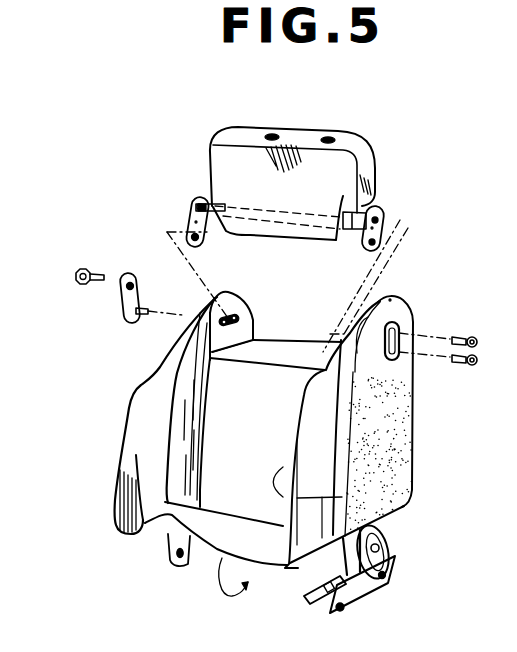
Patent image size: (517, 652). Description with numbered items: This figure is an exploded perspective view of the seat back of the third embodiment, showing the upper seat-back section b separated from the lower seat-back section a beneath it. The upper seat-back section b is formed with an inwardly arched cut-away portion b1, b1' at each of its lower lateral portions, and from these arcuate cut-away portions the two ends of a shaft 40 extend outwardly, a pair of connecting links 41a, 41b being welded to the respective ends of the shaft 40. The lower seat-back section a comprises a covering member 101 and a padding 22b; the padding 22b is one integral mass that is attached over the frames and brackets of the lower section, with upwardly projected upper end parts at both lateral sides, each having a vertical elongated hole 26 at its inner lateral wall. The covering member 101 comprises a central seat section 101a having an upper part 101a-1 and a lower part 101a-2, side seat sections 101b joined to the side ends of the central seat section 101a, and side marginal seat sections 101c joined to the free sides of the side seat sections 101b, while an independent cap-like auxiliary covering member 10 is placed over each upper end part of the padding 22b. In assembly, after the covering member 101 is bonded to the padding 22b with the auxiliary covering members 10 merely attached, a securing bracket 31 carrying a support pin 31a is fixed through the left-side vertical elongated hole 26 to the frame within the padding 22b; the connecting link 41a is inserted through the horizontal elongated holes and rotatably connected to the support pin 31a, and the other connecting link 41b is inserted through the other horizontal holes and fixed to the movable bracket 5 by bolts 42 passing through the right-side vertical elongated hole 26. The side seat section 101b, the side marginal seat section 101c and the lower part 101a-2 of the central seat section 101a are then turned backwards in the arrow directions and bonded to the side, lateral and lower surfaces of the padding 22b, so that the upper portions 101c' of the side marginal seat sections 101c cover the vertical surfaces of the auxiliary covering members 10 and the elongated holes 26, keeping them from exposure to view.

The reclining mechanism bracket 5 is at (392, 520).
The auxiliary covering member 10 is at (402, 316).
The padding 22b is at (395, 460).
The vertical elongated hole 26 is at (398, 357).
The bracket 31 is at (133, 273).
The support pin 31a is at (128, 316).
The shaft 40 is at (205, 200).
The connecting link 41a is at (186, 214).
The connecting link 41b is at (384, 216).
The bolts 42 is at (477, 338).
The covering member 101 is at (125, 404).
The central seat section 101a is at (270, 447).
The upper part of central seat section 101a-1 is at (280, 350).
The lower part of central seat section 101a-2 is at (213, 536).
The side seat sections 101b is at (168, 488).
The side marginal seat sections 101c is at (177, 466).
The upper portions of side marginal seat sections 101c' is at (276, 315).
The lower seat-back section a is at (442, 491).
The upper seat-back section b is at (211, 148).
The arcuate cut-away portion b1 is at (290, 247).
The arcuate cut-away portion b1' is at (229, 236).